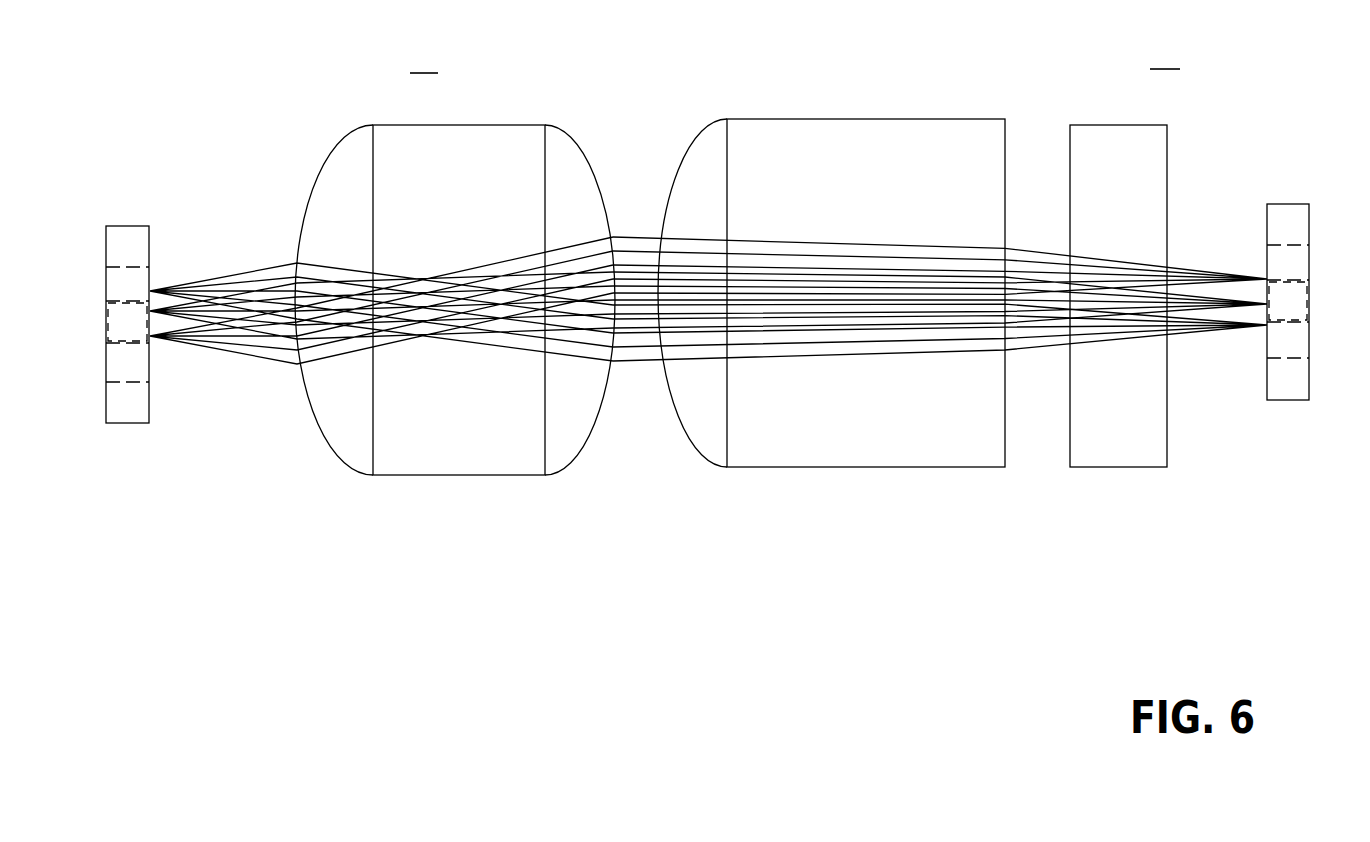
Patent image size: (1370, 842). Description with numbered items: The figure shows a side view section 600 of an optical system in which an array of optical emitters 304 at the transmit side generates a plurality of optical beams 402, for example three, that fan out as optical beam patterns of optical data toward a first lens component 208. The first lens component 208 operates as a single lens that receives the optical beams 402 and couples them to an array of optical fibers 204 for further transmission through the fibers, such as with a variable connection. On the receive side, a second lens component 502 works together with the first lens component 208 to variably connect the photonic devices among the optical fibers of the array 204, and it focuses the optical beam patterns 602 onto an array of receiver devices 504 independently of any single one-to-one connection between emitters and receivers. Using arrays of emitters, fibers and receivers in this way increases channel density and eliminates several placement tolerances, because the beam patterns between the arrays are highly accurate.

The side view section 600 is at (270, 22).
The array of optical emitters 304 is at (123, 226).
The optical beams 402 is at (203, 252).
The first lens component 208 is at (473, 125).
The array of optical fibers 204 is at (900, 119).
The second lens component 502 is at (1114, 125).
The optical beam patterns 602 is at (1188, 240).
The array of receiver devices 504 is at (1289, 204).